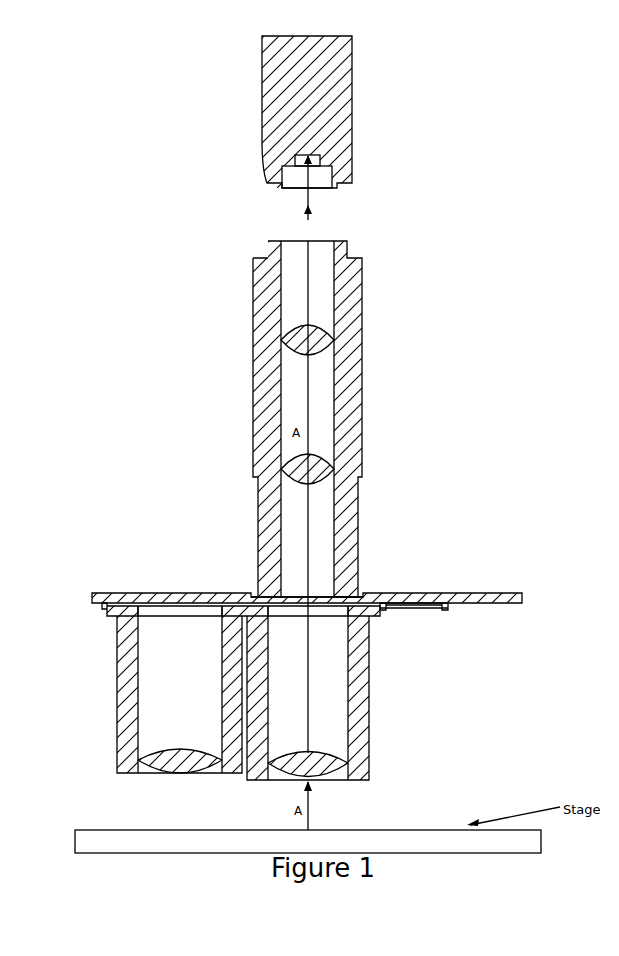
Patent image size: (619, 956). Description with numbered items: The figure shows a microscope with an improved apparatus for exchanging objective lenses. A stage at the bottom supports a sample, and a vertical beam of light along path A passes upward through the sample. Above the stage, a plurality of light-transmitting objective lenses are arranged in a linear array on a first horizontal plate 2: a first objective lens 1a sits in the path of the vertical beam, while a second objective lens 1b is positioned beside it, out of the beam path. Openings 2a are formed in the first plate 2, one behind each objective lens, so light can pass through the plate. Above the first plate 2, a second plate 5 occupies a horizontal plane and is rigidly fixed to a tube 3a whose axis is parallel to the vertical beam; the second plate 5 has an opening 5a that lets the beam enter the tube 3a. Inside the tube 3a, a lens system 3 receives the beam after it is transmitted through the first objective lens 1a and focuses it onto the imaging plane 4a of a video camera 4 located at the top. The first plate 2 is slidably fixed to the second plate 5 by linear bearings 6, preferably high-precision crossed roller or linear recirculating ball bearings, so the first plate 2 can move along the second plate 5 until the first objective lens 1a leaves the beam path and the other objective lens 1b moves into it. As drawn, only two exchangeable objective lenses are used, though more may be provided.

The first objective lens 1a is at (370, 742).
The objective lens 1b is at (117, 723).
The first horizontal plate 2 is at (440, 697).
The openings 2a is at (400, 713).
The lens system 3 is at (295, 462).
The tube 3a is at (360, 383).
The video camera 4 is at (262, 130).
The imaging plane 4a is at (320, 158).
The second plate 5 is at (140, 593).
The opening 5a is at (367, 593).
The linear bearings 6 is at (450, 602).